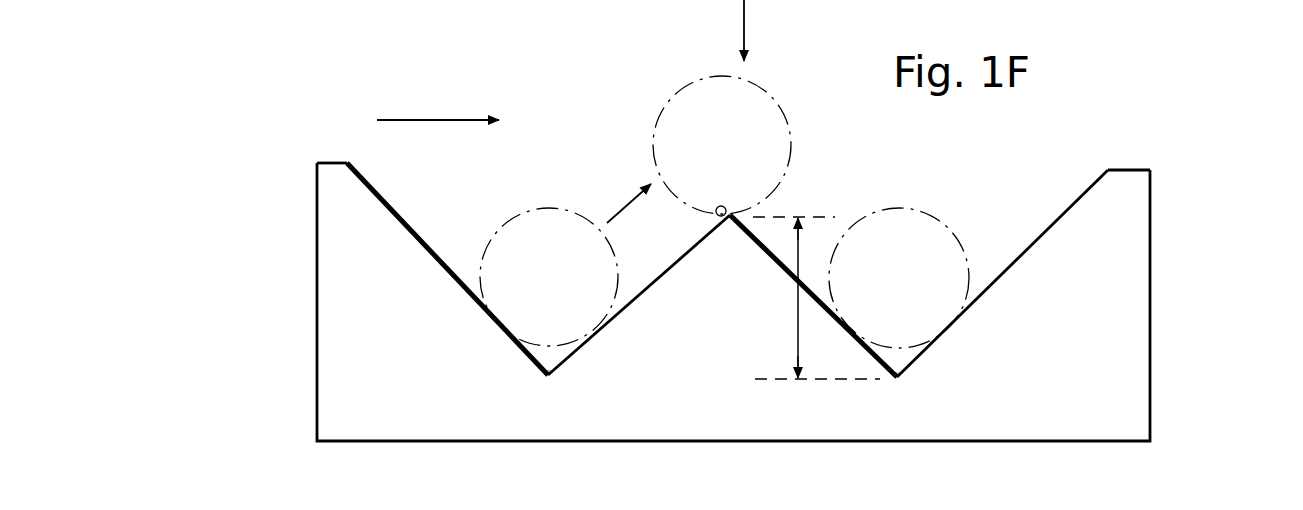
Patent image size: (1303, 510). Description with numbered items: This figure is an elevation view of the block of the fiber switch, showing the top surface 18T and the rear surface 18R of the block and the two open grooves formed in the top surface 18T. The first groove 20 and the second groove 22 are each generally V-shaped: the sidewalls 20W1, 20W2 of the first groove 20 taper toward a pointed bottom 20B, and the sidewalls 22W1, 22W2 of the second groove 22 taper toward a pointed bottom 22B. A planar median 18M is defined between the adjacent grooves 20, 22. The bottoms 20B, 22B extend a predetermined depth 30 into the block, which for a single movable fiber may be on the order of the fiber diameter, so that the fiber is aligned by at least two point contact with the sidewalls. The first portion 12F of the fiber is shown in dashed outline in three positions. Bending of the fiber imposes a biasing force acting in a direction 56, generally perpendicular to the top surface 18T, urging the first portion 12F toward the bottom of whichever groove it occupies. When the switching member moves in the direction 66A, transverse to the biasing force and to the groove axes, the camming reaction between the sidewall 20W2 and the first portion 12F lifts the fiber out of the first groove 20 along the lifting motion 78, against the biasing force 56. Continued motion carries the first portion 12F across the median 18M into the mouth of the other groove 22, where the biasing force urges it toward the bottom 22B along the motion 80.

The first predetermined portion of the fiber 12F is at (543, 238).
The top surface 18T is at (338, 160).
The rear surface 18R is at (1073, 347).
The planar median 18M is at (722, 215).
The first open groove 20 is at (536, 250).
The sidewall of the first groove 20W1 is at (432, 249).
The sidewall of the first groove 20W2 is at (632, 285).
The pointed bottom of the first groove 20B is at (548, 377).
The second open groove 22 is at (922, 299).
The sidewall of the second groove 22W1 is at (878, 343).
The sidewall of the second groove 22W2 is at (1018, 248).
The pointed bottom of the second groove 22B is at (897, 378).
The depth 30 is at (798, 322).
The direction of biasing force 56 is at (744, 28).
The direction of switching member motion 66A is at (428, 120).
The lifting motion 78 is at (619, 214).
The motion into the second groove 80 is at (845, 214).